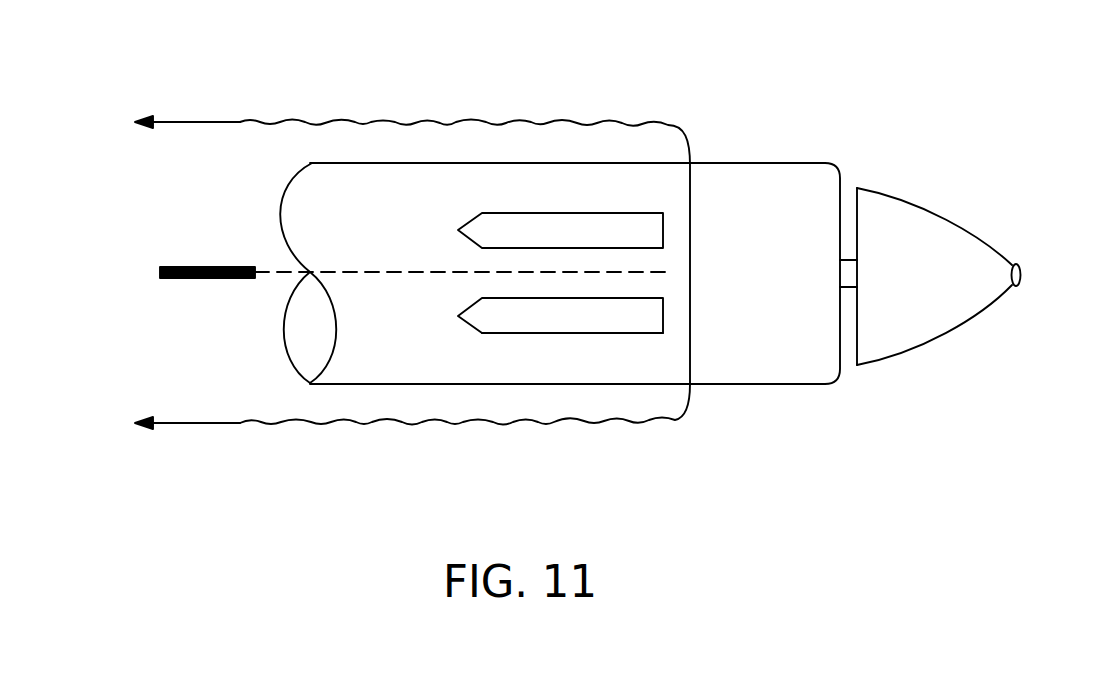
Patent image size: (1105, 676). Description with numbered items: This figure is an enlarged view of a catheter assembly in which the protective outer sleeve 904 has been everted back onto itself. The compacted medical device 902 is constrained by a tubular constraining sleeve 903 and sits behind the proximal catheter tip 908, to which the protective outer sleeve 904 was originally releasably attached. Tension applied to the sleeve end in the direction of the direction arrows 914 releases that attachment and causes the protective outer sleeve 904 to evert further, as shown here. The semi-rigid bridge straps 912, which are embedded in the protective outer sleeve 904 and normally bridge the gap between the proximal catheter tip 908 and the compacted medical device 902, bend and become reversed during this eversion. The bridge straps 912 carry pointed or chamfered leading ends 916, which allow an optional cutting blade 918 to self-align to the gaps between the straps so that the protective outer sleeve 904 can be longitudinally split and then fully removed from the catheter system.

The compacted medical device 902 is at (740, 163).
The tubular constraining sleeve 903 is at (802, 163).
The protective outer sleeve 904 is at (385, 125).
The proximal catheter tip 908 is at (966, 224).
The semi-rigid bridge straps 912 is at (575, 333).
The direction arrows 914 is at (208, 122).
The chamfered leading ends 916 is at (478, 215).
The cutting blade 918 is at (208, 280).